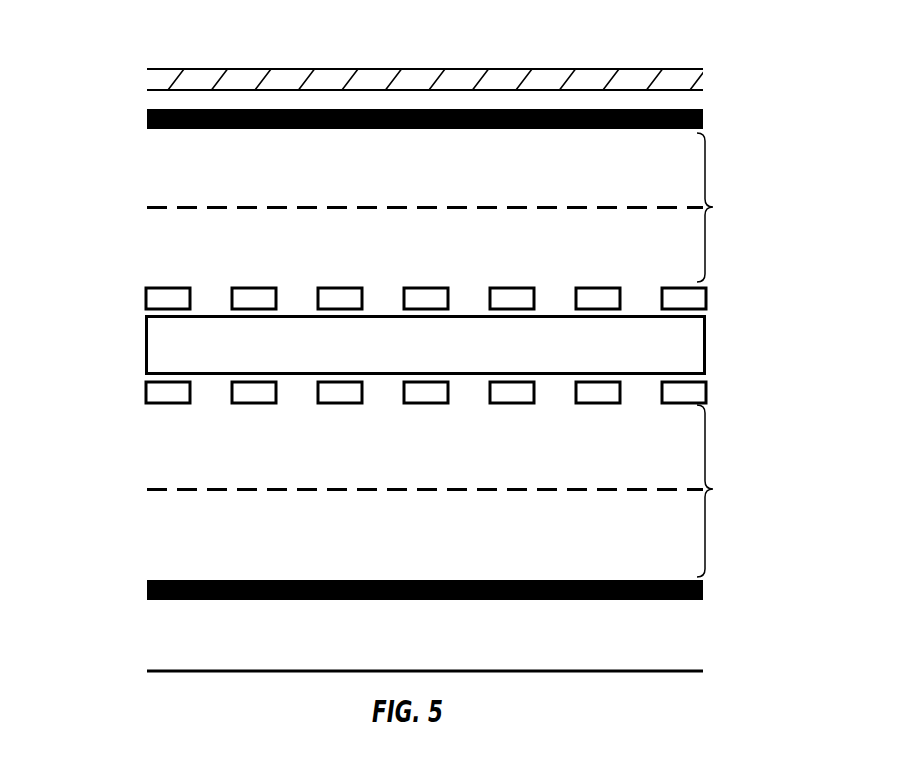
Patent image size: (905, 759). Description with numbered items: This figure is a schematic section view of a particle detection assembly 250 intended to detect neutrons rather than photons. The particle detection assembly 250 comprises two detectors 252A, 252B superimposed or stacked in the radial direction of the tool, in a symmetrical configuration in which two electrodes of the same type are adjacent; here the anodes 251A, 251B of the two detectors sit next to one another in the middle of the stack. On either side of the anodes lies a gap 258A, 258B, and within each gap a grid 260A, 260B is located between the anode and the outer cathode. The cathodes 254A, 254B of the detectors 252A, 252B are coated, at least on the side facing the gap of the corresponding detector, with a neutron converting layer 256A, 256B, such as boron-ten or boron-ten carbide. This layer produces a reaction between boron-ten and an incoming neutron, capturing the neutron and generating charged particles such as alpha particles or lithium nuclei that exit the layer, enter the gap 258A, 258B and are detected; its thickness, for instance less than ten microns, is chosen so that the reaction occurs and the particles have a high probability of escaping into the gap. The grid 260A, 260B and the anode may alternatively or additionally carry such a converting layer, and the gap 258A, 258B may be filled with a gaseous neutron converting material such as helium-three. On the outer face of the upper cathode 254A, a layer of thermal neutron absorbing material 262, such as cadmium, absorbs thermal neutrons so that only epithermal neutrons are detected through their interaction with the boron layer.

The particle detection assembly 250 is at (130, 66).
The layer of thermal neutron absorbing material 262 is at (331, 56).
The cathode 254A is at (724, 97).
The neutron converting layer 256A is at (724, 123).
The gap 258A is at (728, 207).
The detector 252A is at (110, 147).
The grid 260A is at (152, 205).
The anode 251A is at (724, 299).
The anode 251B is at (724, 392).
The gap 258B is at (728, 489).
The grid 260B is at (152, 487).
The detector 252B is at (110, 540).
The neutron converting layer 256B is at (724, 590).
The cathode 254B is at (724, 637).